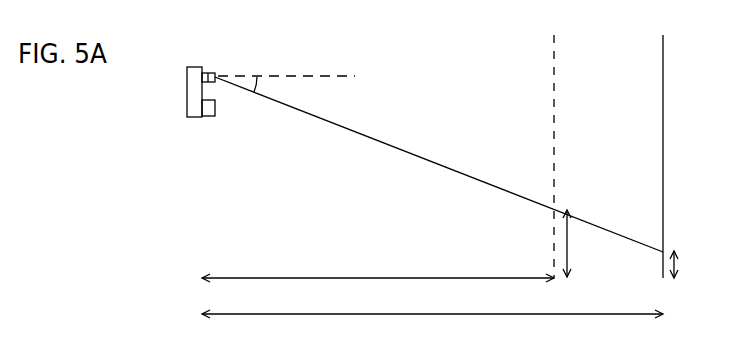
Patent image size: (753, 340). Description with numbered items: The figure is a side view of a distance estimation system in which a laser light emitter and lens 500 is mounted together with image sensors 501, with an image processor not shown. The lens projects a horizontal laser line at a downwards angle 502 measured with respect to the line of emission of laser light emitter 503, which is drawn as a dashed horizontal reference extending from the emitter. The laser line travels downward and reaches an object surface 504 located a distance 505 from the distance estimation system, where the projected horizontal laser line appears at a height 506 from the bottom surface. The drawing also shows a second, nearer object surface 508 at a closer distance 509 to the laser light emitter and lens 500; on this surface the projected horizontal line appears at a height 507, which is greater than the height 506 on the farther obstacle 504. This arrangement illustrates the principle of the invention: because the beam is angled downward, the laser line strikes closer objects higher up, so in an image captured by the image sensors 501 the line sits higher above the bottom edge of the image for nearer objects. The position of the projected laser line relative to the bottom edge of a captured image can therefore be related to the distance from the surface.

The laser light emitter and lens 500 is at (213, 73).
The image sensors 501 is at (215, 116).
The downwards angle 502 is at (278, 88).
The line of emission of laser light emitter 503 is at (305, 78).
The object surface 504 is at (665, 145).
The distance 505 is at (432, 301).
The height 506 is at (693, 264).
The height 507 is at (585, 243).
The object surface 508 is at (555, 145).
The distance 509 is at (378, 265).